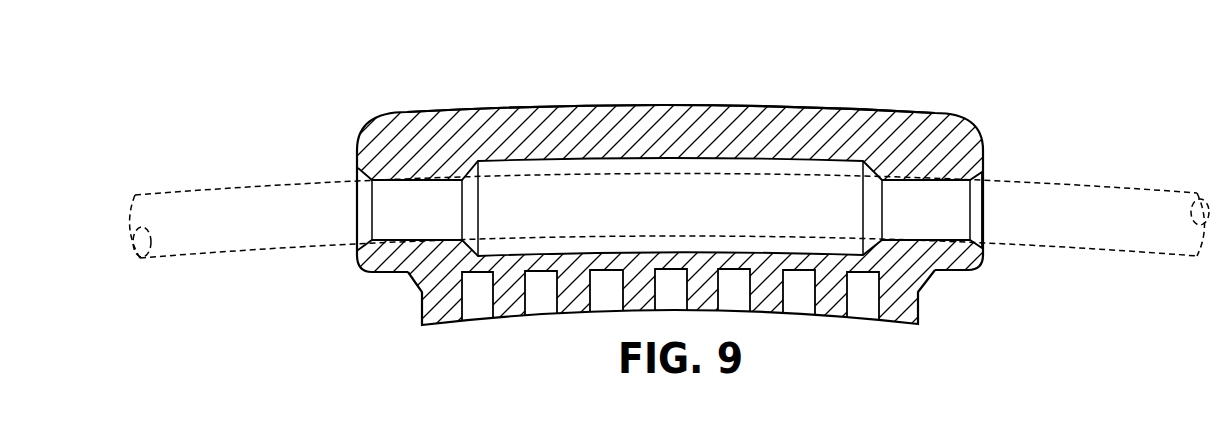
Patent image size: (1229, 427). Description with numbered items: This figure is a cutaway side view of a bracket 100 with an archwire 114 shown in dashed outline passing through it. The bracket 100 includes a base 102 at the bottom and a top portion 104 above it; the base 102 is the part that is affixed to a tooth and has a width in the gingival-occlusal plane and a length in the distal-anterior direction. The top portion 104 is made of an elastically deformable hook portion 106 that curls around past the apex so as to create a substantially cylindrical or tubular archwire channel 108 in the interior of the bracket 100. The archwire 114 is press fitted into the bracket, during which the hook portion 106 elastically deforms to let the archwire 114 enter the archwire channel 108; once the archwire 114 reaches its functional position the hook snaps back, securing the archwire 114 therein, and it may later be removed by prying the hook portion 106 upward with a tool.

The bracket 100 is at (694, 181).
The base 102 is at (920, 305).
The top portion 104 is at (525, 109).
The hook portion 106 is at (673, 107).
The archwire channel 108 is at (945, 203).
The archwire 114 is at (1091, 187).